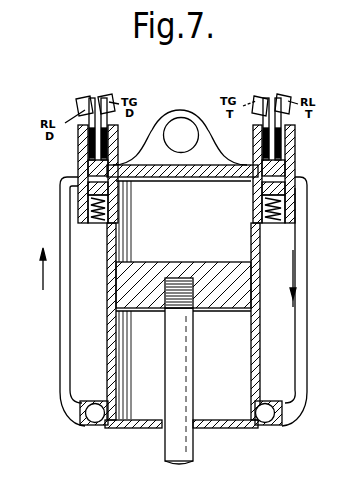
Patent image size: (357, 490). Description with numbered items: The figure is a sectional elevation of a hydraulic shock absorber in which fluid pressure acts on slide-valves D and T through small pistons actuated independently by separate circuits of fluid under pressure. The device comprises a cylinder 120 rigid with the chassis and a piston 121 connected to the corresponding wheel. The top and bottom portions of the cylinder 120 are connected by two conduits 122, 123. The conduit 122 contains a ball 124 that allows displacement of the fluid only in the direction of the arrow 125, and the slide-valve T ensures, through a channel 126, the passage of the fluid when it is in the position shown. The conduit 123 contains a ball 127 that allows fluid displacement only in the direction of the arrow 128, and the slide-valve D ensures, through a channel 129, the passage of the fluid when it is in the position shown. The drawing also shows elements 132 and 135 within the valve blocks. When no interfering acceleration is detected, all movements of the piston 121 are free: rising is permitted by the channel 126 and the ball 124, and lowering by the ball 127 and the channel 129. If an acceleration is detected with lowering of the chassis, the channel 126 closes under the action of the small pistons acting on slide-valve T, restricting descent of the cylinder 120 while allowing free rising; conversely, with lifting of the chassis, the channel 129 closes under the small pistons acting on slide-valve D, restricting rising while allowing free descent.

The cylinder 120 is at (256, 337).
The piston 121 is at (125, 292).
The conduit 122 is at (303, 257).
The conduit 123 is at (61, 297).
The ball 124 is at (272, 400).
The arrow 125 is at (291, 281).
The channel 126 is at (282, 180).
The ball 127 is at (99, 402).
The arrow 128 is at (41, 268).
The channel 129 is at (77, 177).
The right contact spring 132 is at (274, 213).
The left contact spring 135 is at (92, 212).
The slide-valve D is at (78, 169).
The slide-valve T is at (282, 162).